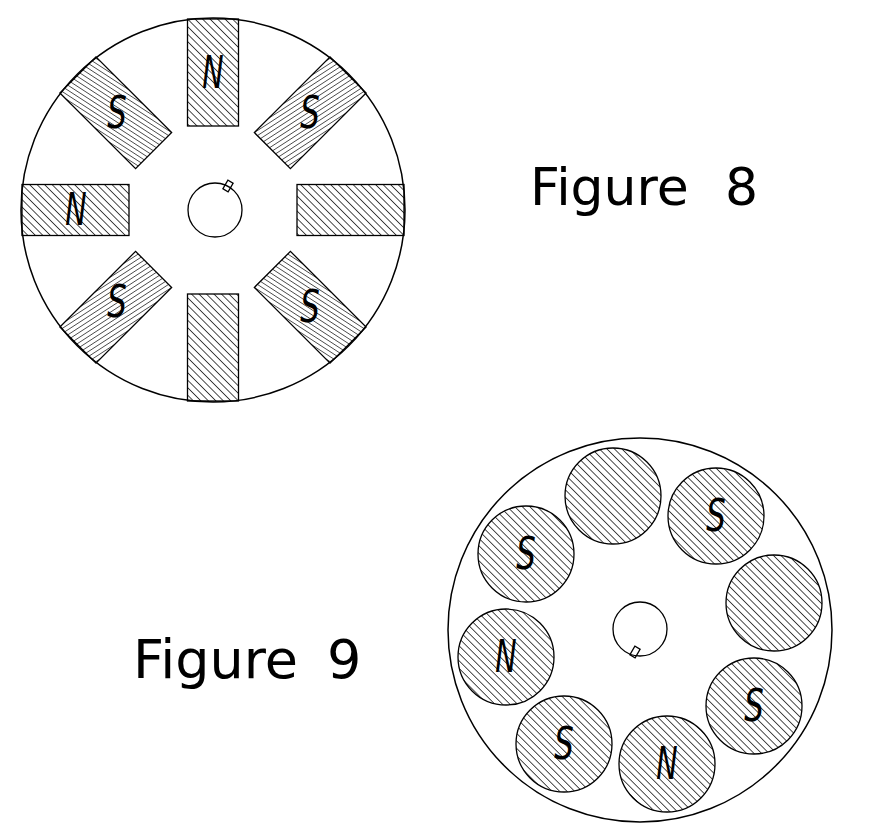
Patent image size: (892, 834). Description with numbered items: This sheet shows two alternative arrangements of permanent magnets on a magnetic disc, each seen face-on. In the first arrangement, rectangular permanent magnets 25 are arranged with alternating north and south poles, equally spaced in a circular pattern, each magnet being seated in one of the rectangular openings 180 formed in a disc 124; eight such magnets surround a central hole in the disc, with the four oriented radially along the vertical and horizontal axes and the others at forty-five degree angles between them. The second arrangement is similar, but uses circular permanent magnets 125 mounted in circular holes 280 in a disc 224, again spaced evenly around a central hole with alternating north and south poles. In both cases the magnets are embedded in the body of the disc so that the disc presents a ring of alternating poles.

In FIG. 8, the disc 124 is at (397, 268).
In FIG. 8, the rectangular openings 180 is at (390, 190).
In FIG. 8, the rectangular permanent magnets 25 is at (240, 373).
In FIG. 9, the disc 224 is at (473, 600).
In FIG. 9, the circular permanent magnets 125 is at (607, 462).
In FIG. 9, the circular holes 280 is at (808, 565).